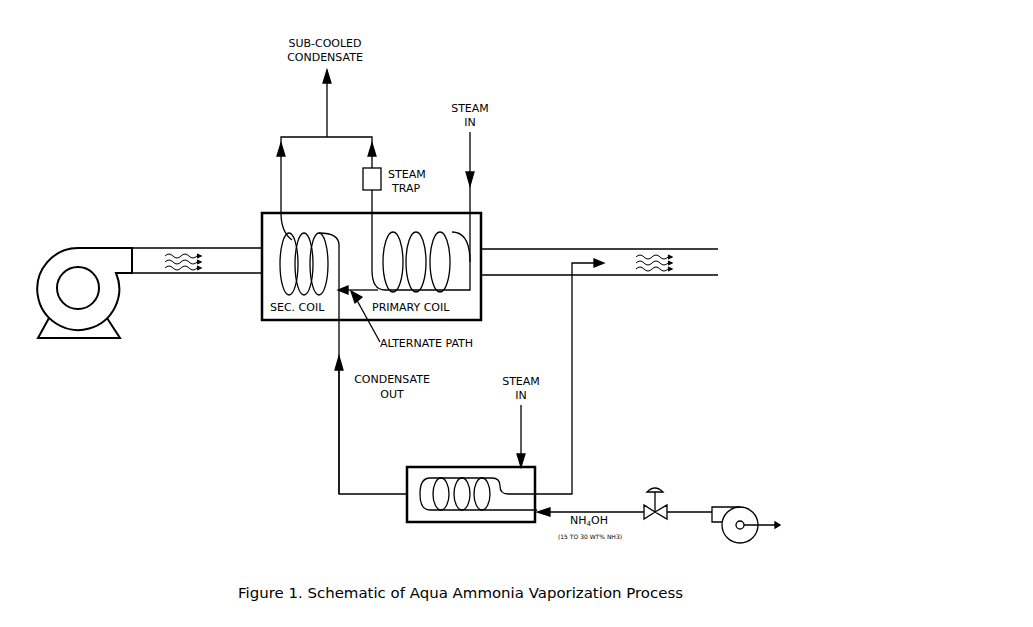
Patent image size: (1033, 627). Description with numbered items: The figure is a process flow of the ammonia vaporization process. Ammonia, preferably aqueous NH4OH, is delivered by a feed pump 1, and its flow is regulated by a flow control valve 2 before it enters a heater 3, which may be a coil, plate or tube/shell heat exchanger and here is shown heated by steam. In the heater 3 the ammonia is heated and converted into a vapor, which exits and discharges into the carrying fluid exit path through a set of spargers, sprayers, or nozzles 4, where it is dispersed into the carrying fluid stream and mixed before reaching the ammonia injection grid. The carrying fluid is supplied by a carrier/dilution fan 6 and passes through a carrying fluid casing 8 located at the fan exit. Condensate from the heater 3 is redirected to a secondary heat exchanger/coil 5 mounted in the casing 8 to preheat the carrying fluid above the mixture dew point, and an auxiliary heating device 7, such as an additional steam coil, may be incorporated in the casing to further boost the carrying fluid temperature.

The feed pump 1 is at (749, 530).
The flow control valve 2 is at (655, 491).
The heater 3 is at (458, 495).
The spargers, sprayers, or nozzles 4 is at (541, 384).
The secondary heat exchanger/coil 5 is at (309, 353).
The carrier/dilution fan 6 is at (70, 310).
The auxiliary heating devices 7 is at (421, 212).
The carrying fluid casing 8 is at (636, 278).